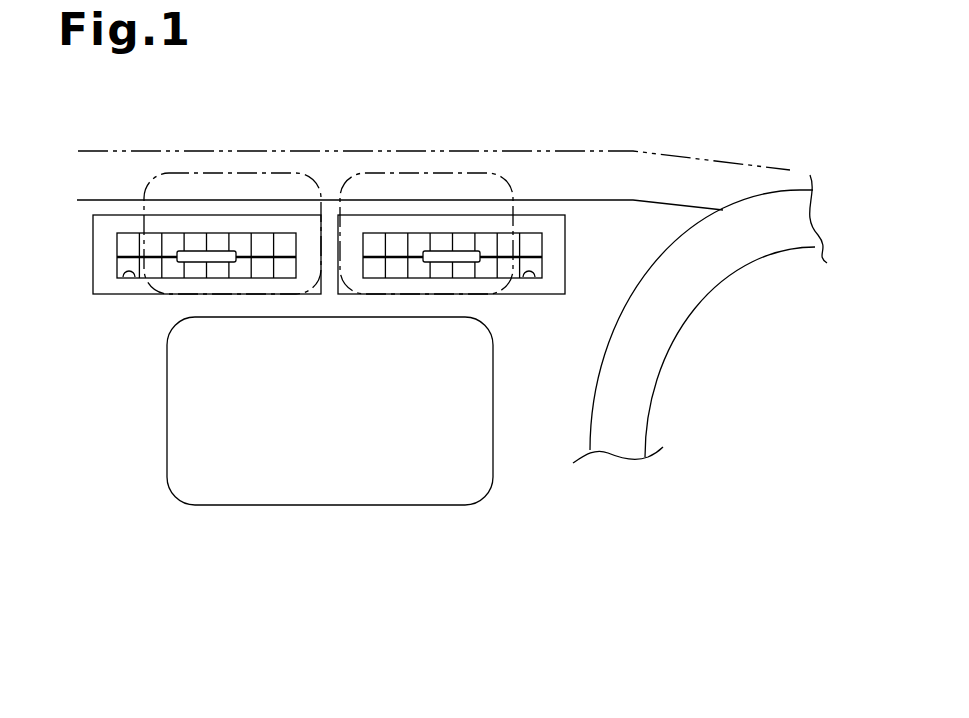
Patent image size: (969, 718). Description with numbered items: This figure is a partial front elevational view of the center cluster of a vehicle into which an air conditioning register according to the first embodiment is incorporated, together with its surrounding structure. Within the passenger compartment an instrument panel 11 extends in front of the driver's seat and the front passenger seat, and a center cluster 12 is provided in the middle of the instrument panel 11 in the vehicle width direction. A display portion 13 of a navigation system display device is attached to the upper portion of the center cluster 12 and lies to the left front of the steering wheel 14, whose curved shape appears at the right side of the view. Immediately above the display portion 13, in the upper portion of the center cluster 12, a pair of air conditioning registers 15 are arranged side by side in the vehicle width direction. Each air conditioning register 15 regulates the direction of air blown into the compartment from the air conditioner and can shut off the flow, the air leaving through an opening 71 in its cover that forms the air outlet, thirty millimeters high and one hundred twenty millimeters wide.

The instrument panel 11 is at (585, 198).
The center cluster 12 is at (338, 524).
The display portion 13 is at (475, 433).
The steering wheel 14 is at (633, 402).
The air conditioning register 15 is at (100, 262).
The opening 71 is at (126, 277).